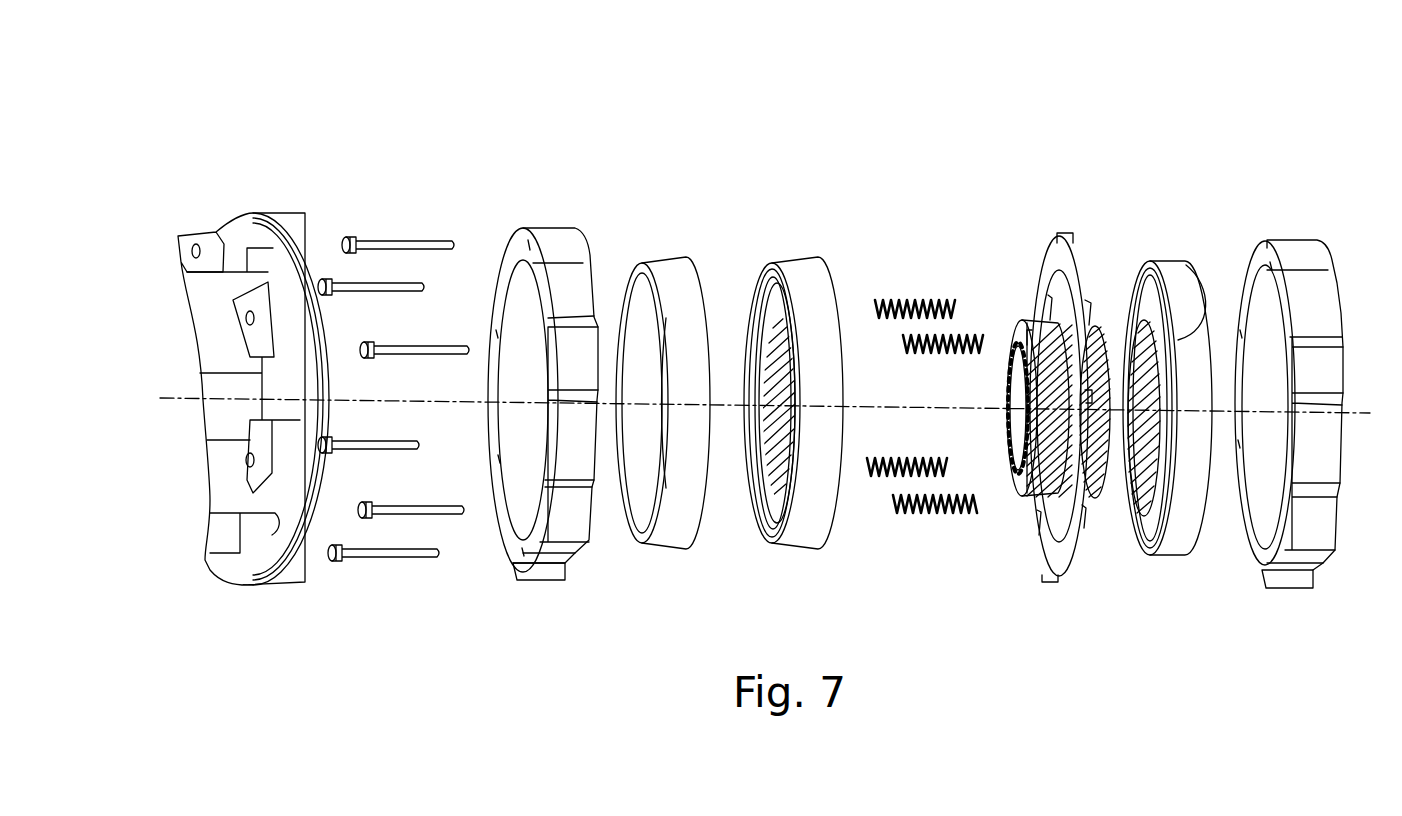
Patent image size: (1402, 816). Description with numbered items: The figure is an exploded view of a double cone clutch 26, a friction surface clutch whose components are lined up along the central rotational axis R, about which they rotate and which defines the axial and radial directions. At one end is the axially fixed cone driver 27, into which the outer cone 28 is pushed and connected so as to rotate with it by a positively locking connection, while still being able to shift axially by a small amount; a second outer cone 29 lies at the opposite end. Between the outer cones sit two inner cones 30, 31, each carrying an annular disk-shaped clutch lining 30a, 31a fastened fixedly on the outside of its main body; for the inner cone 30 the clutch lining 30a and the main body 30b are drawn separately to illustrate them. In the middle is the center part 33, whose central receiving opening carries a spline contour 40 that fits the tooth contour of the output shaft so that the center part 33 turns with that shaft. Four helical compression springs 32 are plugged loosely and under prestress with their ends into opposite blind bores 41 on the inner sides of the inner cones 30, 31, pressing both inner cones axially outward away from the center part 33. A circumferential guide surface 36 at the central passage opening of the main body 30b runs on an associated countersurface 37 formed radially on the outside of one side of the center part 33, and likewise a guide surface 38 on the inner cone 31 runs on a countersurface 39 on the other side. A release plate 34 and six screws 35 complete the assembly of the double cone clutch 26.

The double cone clutch 26 is at (1220, 142).
The cone driver 27 is at (255, 197).
The outer cone 28 is at (545, 222).
The outer cone 29 is at (1296, 236).
The inner cone 30 is at (863, 186).
The clutch lining 30a is at (672, 268).
The main body 30b is at (830, 262).
The inner cone 31 is at (1162, 255).
The clutch lining 31a is at (1187, 278).
The compression spring 32 is at (925, 300).
The center part 33 is at (1000, 305).
The release plate 34 is at (1068, 238).
The screw 35 is at (397, 237).
The guide surface 36 is at (776, 300).
The countersurface 37 is at (1022, 505).
The guide surface 38 is at (1128, 478).
The countersurface 39 is at (1092, 305).
The spline contour 40 is at (1010, 387).
The blind bore 41 is at (1100, 320).
The rotational axis R is at (955, 407).